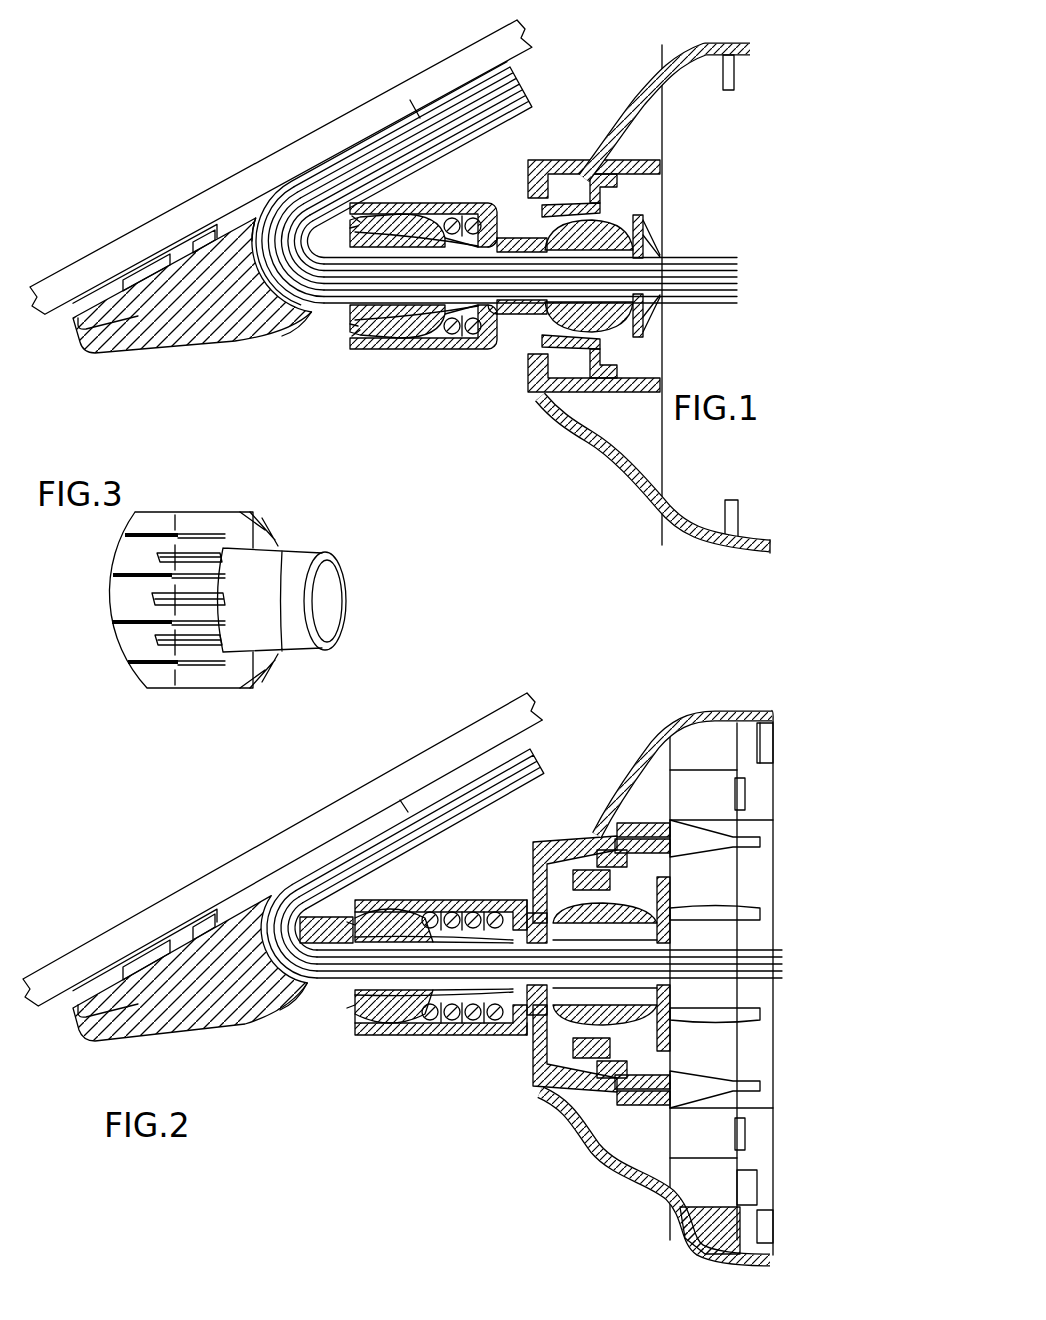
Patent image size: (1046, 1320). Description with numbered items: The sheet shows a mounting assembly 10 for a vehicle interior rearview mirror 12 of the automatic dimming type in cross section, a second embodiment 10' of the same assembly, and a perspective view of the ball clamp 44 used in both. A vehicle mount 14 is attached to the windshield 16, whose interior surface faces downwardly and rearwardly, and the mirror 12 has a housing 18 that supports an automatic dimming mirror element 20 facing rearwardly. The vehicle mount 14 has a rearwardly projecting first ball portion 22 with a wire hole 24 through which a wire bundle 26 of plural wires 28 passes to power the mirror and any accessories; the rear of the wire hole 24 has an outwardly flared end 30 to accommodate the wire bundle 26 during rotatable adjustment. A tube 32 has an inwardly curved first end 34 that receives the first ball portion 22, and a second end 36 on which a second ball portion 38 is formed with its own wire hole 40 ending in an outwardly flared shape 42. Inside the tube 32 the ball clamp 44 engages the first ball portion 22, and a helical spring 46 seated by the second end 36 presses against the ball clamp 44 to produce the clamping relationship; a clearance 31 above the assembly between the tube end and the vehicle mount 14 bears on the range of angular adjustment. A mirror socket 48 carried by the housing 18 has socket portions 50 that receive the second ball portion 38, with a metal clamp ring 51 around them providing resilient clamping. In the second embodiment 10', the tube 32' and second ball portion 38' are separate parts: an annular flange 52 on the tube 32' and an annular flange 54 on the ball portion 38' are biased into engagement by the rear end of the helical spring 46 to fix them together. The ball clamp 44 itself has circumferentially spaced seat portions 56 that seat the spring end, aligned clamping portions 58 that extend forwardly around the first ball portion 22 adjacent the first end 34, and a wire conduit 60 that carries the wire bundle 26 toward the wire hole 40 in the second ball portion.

In FIG. 1, the mounting assembly 10 is at (379, 420).
In FIG. 2, the mounting assembly (second embodiment) 10' is at (338, 1117).
In FIG. 1, the vehicle interior rearview mirror 12 is at (620, 473).
In FIG. 2, the vehicle interior rearview mirror 12 is at (624, 1189).
In FIG. 1, the vehicle mount 14 is at (193, 330).
In FIG. 2, the vehicle mount 14 is at (200, 1035).
In FIG. 1, the windshield 16 is at (197, 207).
In FIG. 2, the windshield 16 is at (174, 903).
In FIG. 1, the housing 18 is at (612, 103).
In FIG. 2, the housing 18 is at (630, 765).
In FIG. 1, the automatic dimming mirror element 20 is at (736, 90).
In FIG. 2, the automatic dimming mirror element 20 is at (776, 745).
In FIG. 1, the first ball portion 22 is at (330, 313).
In FIG. 2, the first ball portion 22 is at (337, 915).
In FIG. 1, the wire hole 24 is at (292, 185).
In FIG. 2, the wire hole 24 is at (334, 1000).
In FIG. 1, the wire bundle 26 is at (414, 118).
In FIG. 2, the wire bundle 26 is at (405, 810).
In FIG. 1, the wires 28 is at (426, 100).
In FIG. 2, the wires 28 is at (462, 795).
In FIG. 1, the outwardly flared end 30 is at (473, 204).
In FIG. 2, the outwardly flared end 30 is at (437, 897).
In FIG. 1, the clearance 31 is at (390, 190).
In FIG. 1, the tube 32 is at (462, 309).
In FIG. 2, the tube (second embodiment) 32' is at (475, 1000).
In FIG. 1, the first end 34 is at (348, 347).
In FIG. 2, the first end 34 is at (358, 1025).
In FIG. 1, the second end 36 is at (503, 352).
In FIG. 2, the second end 36 is at (530, 895).
In FIG. 1, the second ball portion 38 is at (655, 211).
In FIG. 2, the second ball portion (second embodiment) 38' is at (696, 883).
In FIG. 1, the wire hole 40 is at (662, 263).
In FIG. 2, the wire hole 40 is at (670, 945).
In FIG. 1, the outwardly flared shape 42 is at (663, 303).
In FIG. 2, the outwardly flared shape 42 is at (650, 990).
In FIG. 1, the ball clamp 44 is at (378, 349).
In FIG. 3, the ball clamp 44 is at (208, 693).
In FIG. 2, the ball clamp 44 is at (363, 924).
In FIG. 1, the helical spring 46 is at (458, 353).
In FIG. 2, the helical spring 46 is at (449, 1034).
In FIG. 1, the mirror socket 48 is at (650, 162).
In FIG. 2, the mirror socket 48 is at (672, 802).
In FIG. 1, the socket portions 50 is at (580, 198).
In FIG. 2, the socket portions 50 is at (583, 836).
In FIG. 1, the metal clamp ring 51 is at (552, 197).
In FIG. 2, the metal clamp ring 51 is at (560, 868).
In FIG. 2, the annular flange 52 is at (537, 852).
In FIG. 2, the annular flange 54 is at (467, 1038).
In FIG. 1, the seat portions 56 is at (430, 212).
In FIG. 3, the seat portions 56 is at (227, 518).
In FIG. 2, the seat portions 56 is at (410, 1036).
In FIG. 1, the clamping portions 58 is at (323, 178).
In FIG. 3, the clamping portions 58 is at (127, 557).
In FIG. 2, the clamping portions 58 is at (305, 895).
In FIG. 1, the wire conduit 60 is at (496, 350).
In FIG. 3, the wire conduit 60 is at (277, 545).
In FIG. 2, the wire conduit 60 is at (462, 897).